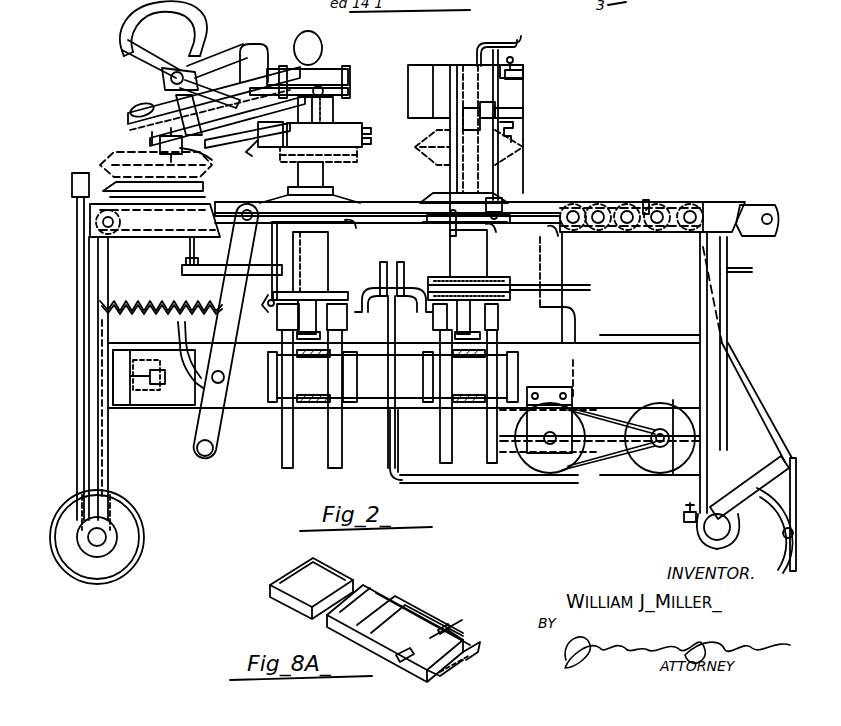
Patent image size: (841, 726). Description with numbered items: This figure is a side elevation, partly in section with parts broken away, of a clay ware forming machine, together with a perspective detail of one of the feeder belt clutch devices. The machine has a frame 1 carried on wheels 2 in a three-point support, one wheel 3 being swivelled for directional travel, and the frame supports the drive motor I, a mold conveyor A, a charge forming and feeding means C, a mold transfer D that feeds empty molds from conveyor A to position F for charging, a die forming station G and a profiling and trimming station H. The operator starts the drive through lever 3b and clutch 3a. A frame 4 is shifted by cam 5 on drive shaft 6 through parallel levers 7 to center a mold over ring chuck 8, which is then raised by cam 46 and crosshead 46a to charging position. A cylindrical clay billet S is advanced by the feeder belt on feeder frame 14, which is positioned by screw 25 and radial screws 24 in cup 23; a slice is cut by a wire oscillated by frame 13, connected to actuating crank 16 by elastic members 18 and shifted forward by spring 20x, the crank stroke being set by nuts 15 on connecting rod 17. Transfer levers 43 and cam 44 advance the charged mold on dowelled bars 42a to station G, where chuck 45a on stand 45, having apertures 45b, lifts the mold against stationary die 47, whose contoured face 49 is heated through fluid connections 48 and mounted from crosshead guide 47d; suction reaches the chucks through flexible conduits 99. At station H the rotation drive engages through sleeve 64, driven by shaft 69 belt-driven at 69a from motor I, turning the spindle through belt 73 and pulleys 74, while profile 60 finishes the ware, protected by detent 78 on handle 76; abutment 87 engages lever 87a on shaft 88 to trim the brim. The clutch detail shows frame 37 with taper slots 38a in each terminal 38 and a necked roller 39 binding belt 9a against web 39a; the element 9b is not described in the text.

In FIG. 2, the mold conveyor A is at (705, 203).
In FIG. 2, the mold transfer D is at (95, 234).
In FIG. 2, the ring chuck 8 is at (115, 240).
In FIG. 2, the frame 4 is at (84, 173).
In FIG. 2, the parallel levers 7 is at (78, 393).
In FIG. 2, the cam 5 is at (96, 330).
In FIG. 2, the frame 1 is at (104, 466).
In FIG. 2, the wheels 2 is at (138, 532).
In FIG. 2, the frame 13 is at (126, 30).
In FIG. 2, the charge forming and feeding means C is at (236, 42).
In FIG. 2, the elastic members 18 is at (171, 79).
In FIG. 2, the cylindrical clay billet S is at (322, 44).
In FIG. 2, the spring 20x is at (141, 106).
In FIG. 2, the charging position F is at (150, 140).
In FIG. 2, the radial screws 24 is at (157, 143).
In FIG. 2, the screw 25 is at (168, 160).
In FIG. 2, the cup 23 is at (182, 152).
In FIG. 2, the actuating crank 16 is at (257, 148).
In FIG. 2, the feeder frame 14 is at (345, 75).
In FIG. 2, the plate 9b is at (330, 86).
In FIG. 2, the die forming station G is at (326, 110).
In FIG. 2, the fluid connections 48 is at (372, 130).
In FIG. 2, the stationary die 47 is at (372, 143).
In FIG. 2, the contoured face 49 is at (344, 150).
In FIG. 2, the dowelled bars 42a is at (376, 203).
In FIG. 2, the profiling and trimming station H is at (476, 129).
In FIG. 2, the crosshead guide 47d is at (474, 64).
In FIG. 2, the handle 76 is at (522, 40).
In FIG. 2, the detent 78 is at (513, 59).
In FIG. 2, the profile 60 is at (512, 124).
In FIG. 2, the shaft 88 is at (500, 166).
In FIG. 2, the lever 87a is at (500, 207).
In FIG. 2, the connecting rod 17 is at (263, 261).
In FIG. 2, the nuts 15 is at (265, 300).
In FIG. 2, the stand 45 is at (329, 270).
In FIG. 2, the apertures 45b is at (336, 238).
In FIG. 2, the chuck 45a is at (358, 226).
In FIG. 2, the abutment 87 is at (450, 229).
In FIG. 2, the sleeve 64 is at (563, 257).
In FIG. 2, the pulleys 74 is at (492, 280).
In FIG. 2, the belt 73 is at (576, 292).
In FIG. 2, the flexible conduits 99 is at (372, 286).
In FIG. 2, the crosshead 46a is at (322, 336).
In FIG. 2, the cam 46 is at (290, 470).
In FIG. 2, the drive shaft 6 is at (148, 404).
In FIG. 2, the levers 43 is at (224, 280).
In FIG. 2, the cam 44 is at (176, 327).
In FIG. 2, the lever 3b is at (727, 301).
In FIG. 2, the swivelled wheel 3 is at (762, 548).
In FIG. 2, the clutch 3a is at (572, 404).
In FIG. 2, the shaft 69 is at (550, 440).
In FIG. 2, the belt drive 69a is at (600, 476).
In FIG. 2, the drive motor I is at (656, 470).
In FIG. 8A, the frame 37 is at (380, 610).
In FIG. 8A, the terminal 38 is at (462, 629).
In FIG. 8A, the elongated taper slots 38a is at (442, 626).
In FIG. 8A, the belt 9a is at (410, 628).
In FIG. 8A, the necked roller 39 is at (426, 678).
In FIG. 8A, the web 39a is at (468, 672).